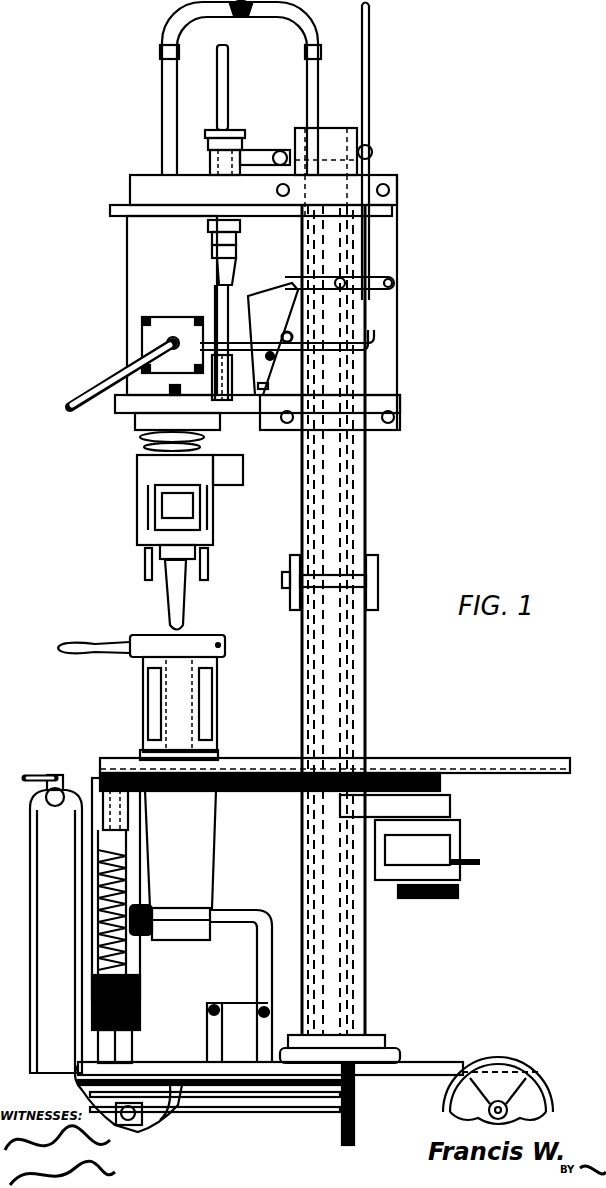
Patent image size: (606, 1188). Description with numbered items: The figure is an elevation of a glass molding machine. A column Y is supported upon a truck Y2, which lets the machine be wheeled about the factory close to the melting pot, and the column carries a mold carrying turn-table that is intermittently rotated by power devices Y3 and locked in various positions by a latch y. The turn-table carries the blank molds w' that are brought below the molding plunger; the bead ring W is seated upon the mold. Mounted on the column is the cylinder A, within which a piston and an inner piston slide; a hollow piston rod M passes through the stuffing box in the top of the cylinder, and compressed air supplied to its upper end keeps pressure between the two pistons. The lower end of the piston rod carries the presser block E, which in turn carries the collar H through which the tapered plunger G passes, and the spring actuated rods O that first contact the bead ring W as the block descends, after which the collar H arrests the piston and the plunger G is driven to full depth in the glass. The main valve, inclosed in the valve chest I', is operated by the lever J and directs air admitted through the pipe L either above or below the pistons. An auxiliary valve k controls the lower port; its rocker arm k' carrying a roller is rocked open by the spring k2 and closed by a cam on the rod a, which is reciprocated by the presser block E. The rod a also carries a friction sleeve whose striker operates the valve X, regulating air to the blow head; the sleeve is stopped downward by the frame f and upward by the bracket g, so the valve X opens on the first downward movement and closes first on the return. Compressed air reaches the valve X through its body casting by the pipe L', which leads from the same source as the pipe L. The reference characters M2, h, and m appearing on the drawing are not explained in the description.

The hollow piston rod M is at (224, 87).
The supply pipe / reservoir M2 is at (188, 580).
The rod a is at (228, 305).
The valve X is at (250, 149).
The cap h is at (217, 148).
The pipe L is at (326, 151).
The bracket g is at (253, 195).
The frame f is at (219, 211).
The cylinder A is at (257, 323).
The spring k2 is at (238, 322).
The pipe L' is at (287, 335).
The valve chest I' is at (172, 345).
The lever J is at (121, 375).
The auxiliary valve k is at (176, 397).
The rocker arm k' is at (255, 341).
The valve handle m is at (147, 586).
The presser block E is at (190, 488).
The collar H is at (196, 548).
The spring actuated rods O is at (172, 566).
The tapered plunger G is at (184, 595).
The column Y is at (337, 574).
The bead ring W is at (141, 647).
The blank mold w' is at (195, 708).
The table Y' is at (335, 900).
The latch y is at (116, 898).
The power devices Y3 is at (410, 839).
The truck Y2 is at (476, 1090).